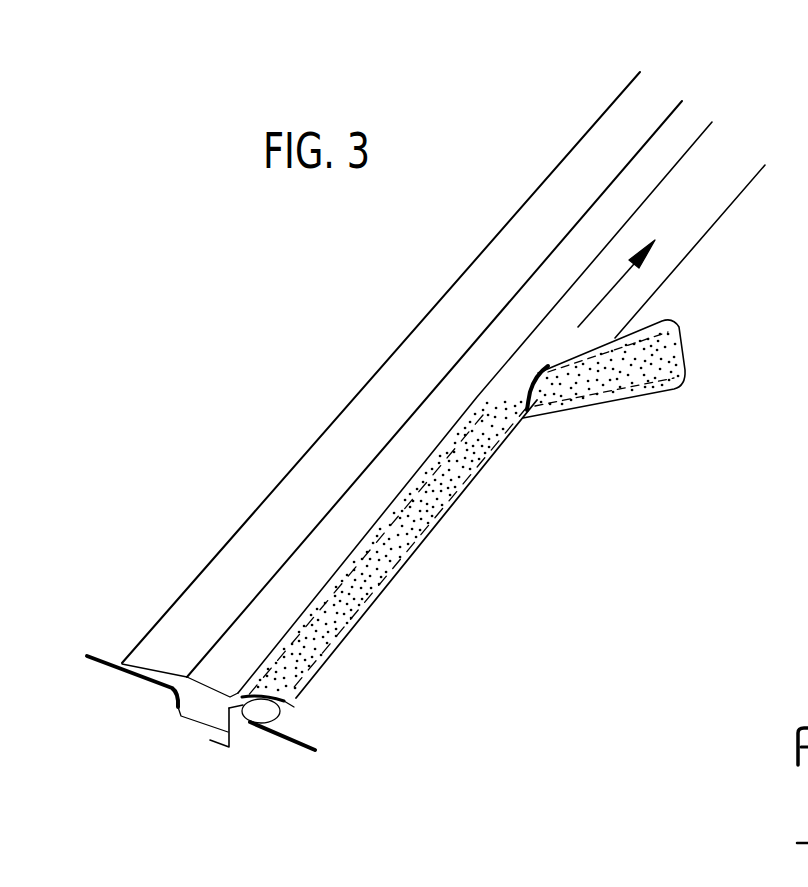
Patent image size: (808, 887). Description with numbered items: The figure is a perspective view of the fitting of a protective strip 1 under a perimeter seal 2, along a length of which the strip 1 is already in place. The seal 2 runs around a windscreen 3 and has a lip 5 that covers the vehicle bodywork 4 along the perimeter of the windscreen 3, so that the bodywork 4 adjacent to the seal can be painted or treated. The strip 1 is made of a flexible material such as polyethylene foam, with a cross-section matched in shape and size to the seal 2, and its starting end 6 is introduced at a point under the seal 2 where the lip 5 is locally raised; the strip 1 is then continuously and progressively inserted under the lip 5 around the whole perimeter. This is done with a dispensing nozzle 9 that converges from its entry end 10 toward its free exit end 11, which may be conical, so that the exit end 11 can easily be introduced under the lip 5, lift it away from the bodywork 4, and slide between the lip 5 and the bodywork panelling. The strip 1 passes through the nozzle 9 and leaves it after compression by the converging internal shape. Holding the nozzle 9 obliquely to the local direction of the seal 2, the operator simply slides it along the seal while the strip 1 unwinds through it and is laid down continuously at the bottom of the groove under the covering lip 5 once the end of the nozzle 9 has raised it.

The strip 1 is at (282, 720).
The perimeter seal 2 is at (191, 733).
The windscreen 3 is at (120, 660).
The vehicle bodywork 4 is at (807, 242).
The lip 5 is at (352, 373).
The starting end 6 is at (163, 588).
The dispensing nozzle 9 is at (638, 397).
The entry end 10 is at (678, 343).
The free exit end 11 is at (471, 405).